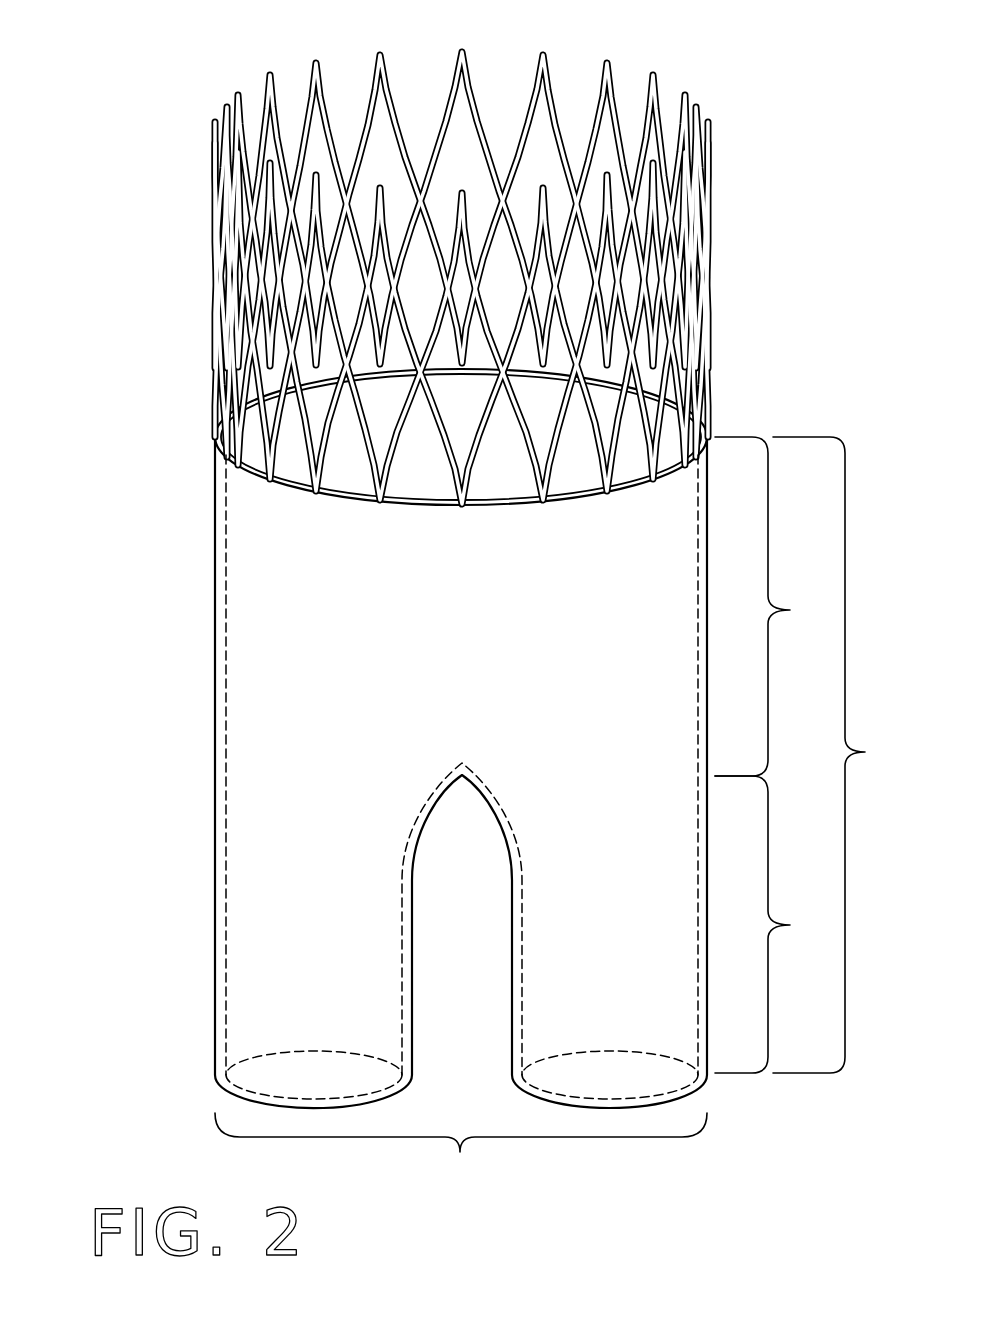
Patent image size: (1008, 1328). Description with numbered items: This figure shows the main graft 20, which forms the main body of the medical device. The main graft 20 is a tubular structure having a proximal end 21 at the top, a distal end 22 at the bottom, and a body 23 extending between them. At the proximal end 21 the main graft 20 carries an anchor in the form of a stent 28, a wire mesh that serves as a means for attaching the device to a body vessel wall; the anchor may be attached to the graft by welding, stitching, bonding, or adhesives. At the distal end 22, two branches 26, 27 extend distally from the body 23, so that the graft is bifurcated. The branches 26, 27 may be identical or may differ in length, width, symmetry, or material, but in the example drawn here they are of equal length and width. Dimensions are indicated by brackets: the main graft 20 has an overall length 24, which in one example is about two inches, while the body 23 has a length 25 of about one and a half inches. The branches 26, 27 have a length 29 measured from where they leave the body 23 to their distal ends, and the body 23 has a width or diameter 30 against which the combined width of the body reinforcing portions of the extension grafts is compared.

The main graft 20 is at (371, 559).
The proximal end 21 is at (200, 468).
The distal end 22 is at (205, 1040).
The body 23 is at (200, 645).
The length 24 is at (914, 772).
The length 25 is at (838, 620).
The branch 26 is at (415, 920).
The branch 27 is at (505, 1015).
The stent 28 is at (192, 248).
The length 29 is at (838, 946).
The diameter 30 is at (462, 1198).